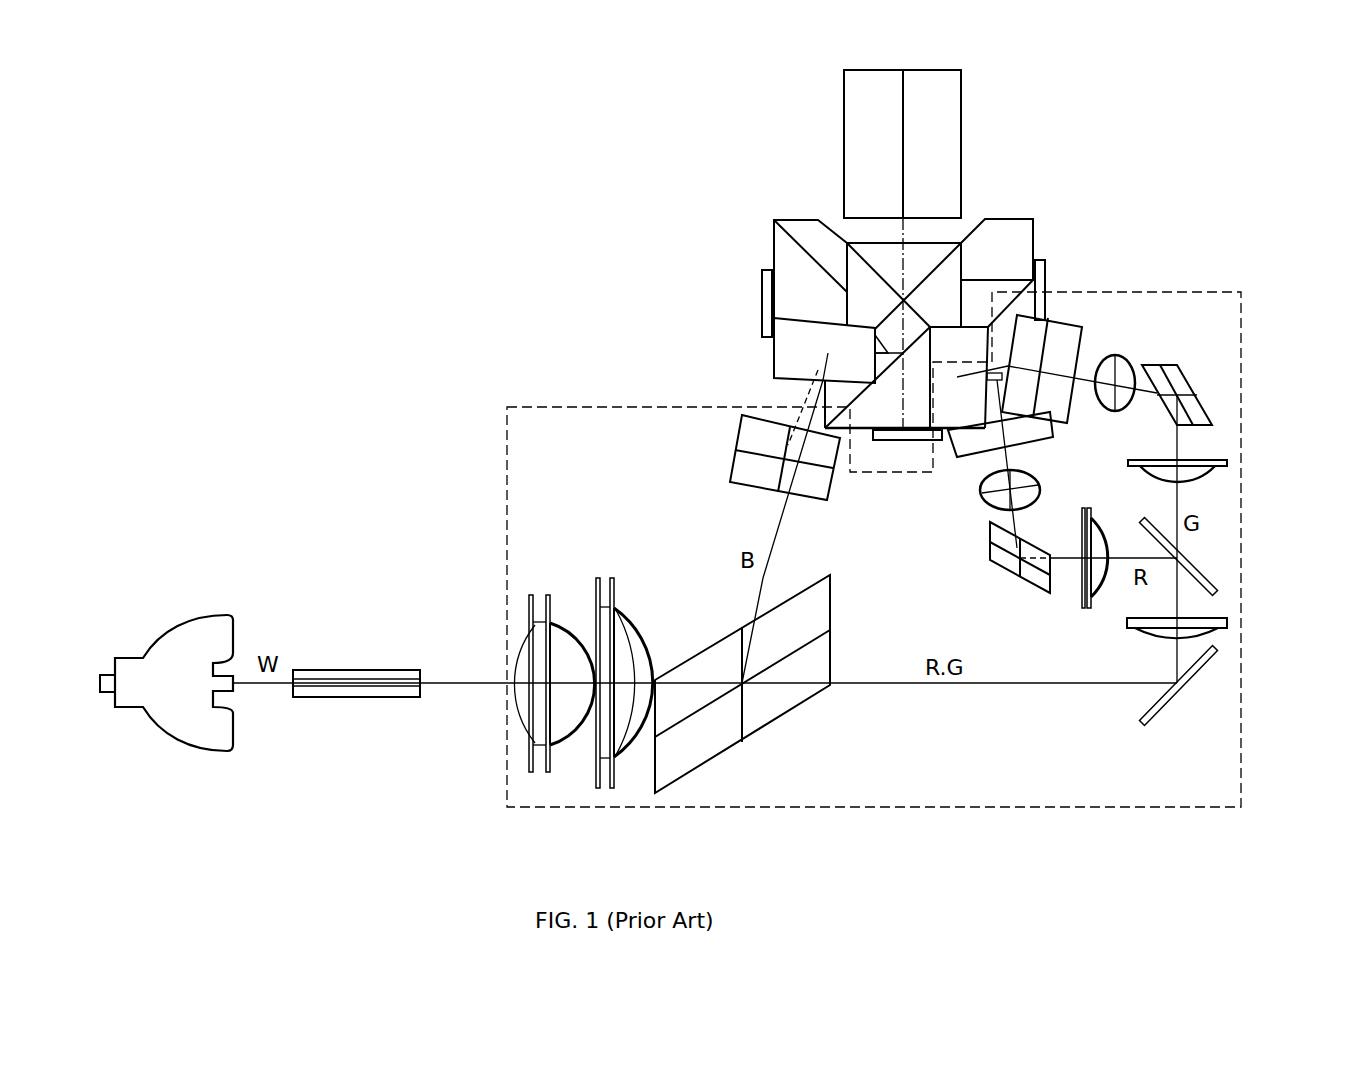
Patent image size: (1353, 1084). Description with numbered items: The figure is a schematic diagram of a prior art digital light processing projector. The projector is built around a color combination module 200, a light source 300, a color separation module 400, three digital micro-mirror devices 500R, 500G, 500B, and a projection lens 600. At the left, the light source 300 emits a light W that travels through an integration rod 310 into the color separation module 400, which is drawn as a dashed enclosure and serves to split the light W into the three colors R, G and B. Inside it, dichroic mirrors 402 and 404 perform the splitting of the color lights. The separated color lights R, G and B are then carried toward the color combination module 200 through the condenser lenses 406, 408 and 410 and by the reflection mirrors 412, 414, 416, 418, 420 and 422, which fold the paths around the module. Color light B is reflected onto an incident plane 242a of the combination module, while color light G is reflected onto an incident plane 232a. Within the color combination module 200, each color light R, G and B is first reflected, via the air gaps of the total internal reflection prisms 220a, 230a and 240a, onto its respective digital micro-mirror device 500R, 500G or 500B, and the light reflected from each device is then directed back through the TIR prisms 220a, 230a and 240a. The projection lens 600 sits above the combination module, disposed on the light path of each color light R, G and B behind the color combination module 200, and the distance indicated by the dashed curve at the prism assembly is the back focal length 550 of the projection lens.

The color combination module 200 is at (1082, 169).
The light source 300 is at (192, 747).
The integration rod 310 is at (357, 700).
The color separation module 400 is at (505, 470).
The dichroic mirror 402 is at (727, 750).
The dichroic mirror 404 is at (1193, 570).
The condenser lens 406 is at (635, 742).
The condenser lens 408 is at (1127, 355).
The condenser lens 410 is at (993, 507).
The reflection mirror 412 is at (748, 470).
The reflection mirror 414 is at (1160, 705).
The reflection mirror 416 is at (1183, 382).
The reflection mirror 418 is at (1068, 333).
The reflection mirror 420 is at (1003, 560).
The reflection mirror 422 is at (972, 445).
The total internal reflection prism 220a is at (1035, 230).
The total internal reflection prism 230a is at (863, 430).
The incident plane 232a is at (977, 412).
The total internal reflection prism 240a is at (772, 242).
The incident plane 242a is at (773, 355).
The digital micro-mirror device 500B is at (760, 305).
The digital micro-mirror device 500R is at (1045, 277).
The digital micro-mirror device 500G is at (908, 442).
The back focal length 550 is at (900, 260).
The projection lens 600 is at (961, 122).